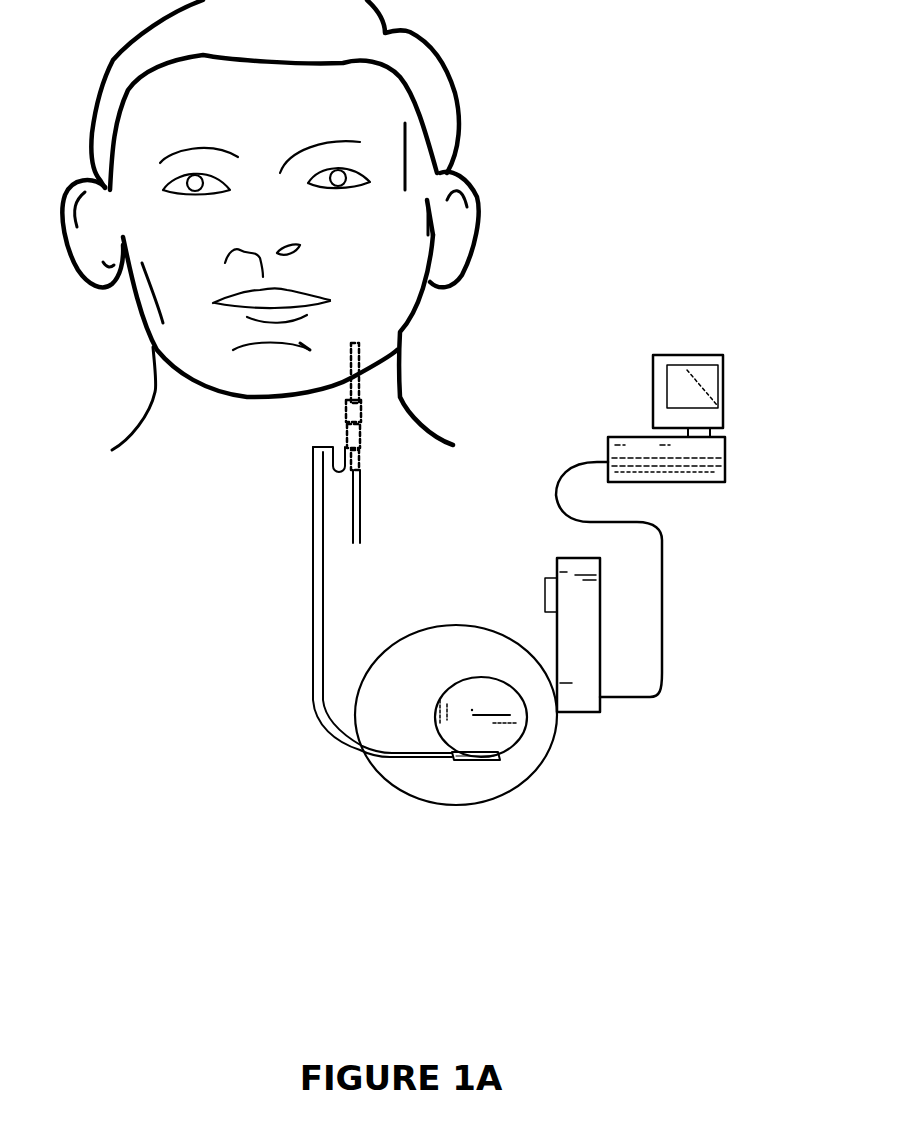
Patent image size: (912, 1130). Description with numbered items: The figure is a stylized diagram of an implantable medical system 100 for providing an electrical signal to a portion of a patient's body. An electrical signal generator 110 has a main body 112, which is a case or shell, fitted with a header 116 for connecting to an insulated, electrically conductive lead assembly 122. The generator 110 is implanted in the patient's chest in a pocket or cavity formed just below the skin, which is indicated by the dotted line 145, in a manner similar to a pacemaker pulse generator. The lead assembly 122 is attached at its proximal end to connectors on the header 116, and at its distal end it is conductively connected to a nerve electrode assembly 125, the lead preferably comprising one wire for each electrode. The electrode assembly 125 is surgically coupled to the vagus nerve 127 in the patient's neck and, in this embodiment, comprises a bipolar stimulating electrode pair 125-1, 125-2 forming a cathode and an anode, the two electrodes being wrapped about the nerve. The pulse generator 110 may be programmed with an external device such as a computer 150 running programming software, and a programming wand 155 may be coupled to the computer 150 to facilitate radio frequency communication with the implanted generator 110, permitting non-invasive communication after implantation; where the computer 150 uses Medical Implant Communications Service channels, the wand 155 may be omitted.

The implantable medical system 100 is at (565, 174).
The electrical signal generator 110 is at (417, 722).
The main body 112 is at (513, 683).
The header 116 is at (472, 763).
The lead assembly 122 is at (317, 578).
The nerve electrode assembly 125 is at (335, 428).
The first stimulating electrode 125-1 is at (360, 403).
The second stimulating electrode 125-2 is at (363, 427).
The vagus nerve 127 is at (360, 390).
The dotted line 145 is at (540, 770).
The computer 150 is at (713, 482).
The programming wand 155 is at (557, 573).